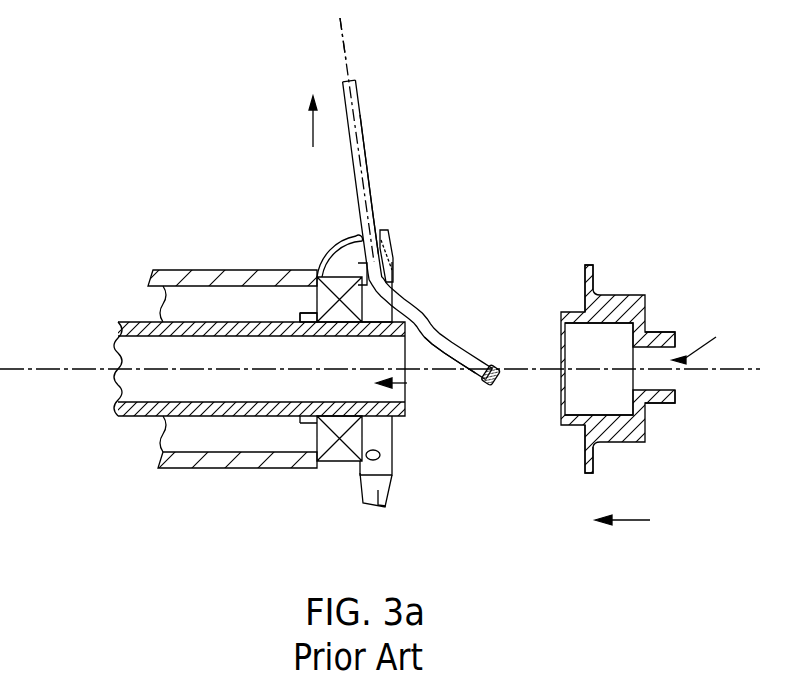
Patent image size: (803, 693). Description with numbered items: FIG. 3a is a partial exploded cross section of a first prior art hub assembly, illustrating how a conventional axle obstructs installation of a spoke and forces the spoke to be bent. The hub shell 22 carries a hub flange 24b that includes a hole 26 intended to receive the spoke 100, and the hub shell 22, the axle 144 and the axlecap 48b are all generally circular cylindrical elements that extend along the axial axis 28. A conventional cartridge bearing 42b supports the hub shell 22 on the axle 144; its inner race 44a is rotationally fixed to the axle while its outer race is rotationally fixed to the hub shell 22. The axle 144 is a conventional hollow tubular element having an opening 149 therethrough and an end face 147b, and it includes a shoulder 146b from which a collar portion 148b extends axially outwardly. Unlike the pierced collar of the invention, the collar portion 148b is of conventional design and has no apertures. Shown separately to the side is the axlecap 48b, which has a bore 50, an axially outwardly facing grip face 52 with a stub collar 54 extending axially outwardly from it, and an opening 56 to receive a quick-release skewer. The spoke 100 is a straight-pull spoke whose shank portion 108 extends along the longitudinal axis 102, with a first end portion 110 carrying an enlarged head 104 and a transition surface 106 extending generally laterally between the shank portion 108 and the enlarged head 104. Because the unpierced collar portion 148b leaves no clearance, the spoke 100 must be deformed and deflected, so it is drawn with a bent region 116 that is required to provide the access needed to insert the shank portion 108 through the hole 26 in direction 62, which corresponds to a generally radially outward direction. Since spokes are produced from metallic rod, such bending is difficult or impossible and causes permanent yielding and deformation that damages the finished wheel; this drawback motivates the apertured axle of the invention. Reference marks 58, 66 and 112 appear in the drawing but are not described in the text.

The hub shell 22 is at (198, 270).
The hub flange 24b is at (357, 243).
The hole 26 is at (382, 250).
The axial axis 28 is at (30, 372).
The bearing 42b is at (352, 466).
The inner race 44a is at (297, 395).
The axlecap 48b is at (614, 295).
The bore 50 is at (583, 330).
The grip face 52 is at (647, 437).
The stub collar 54 is at (664, 330).
The opening 56 is at (686, 358).
The upper fin 58 is at (585, 298).
The direction 62 is at (313, 135).
The movement direction arrow 66 is at (650, 522).
The spoke 100 is at (366, 124).
The longitudinal axis 102 is at (341, 33).
The enlarged head 104 is at (487, 386).
The transition surface 106 is at (492, 362).
The shank portion 108 is at (368, 162).
The first end portion 110 is at (463, 342).
The tube axis line 112 is at (352, 68).
The bent region 116 is at (395, 278).
The axle 144 is at (146, 322).
The shoulder 146b is at (322, 275).
The end face 147b is at (393, 428).
The collar portion 148b is at (385, 438).
The opening 149 is at (405, 383).